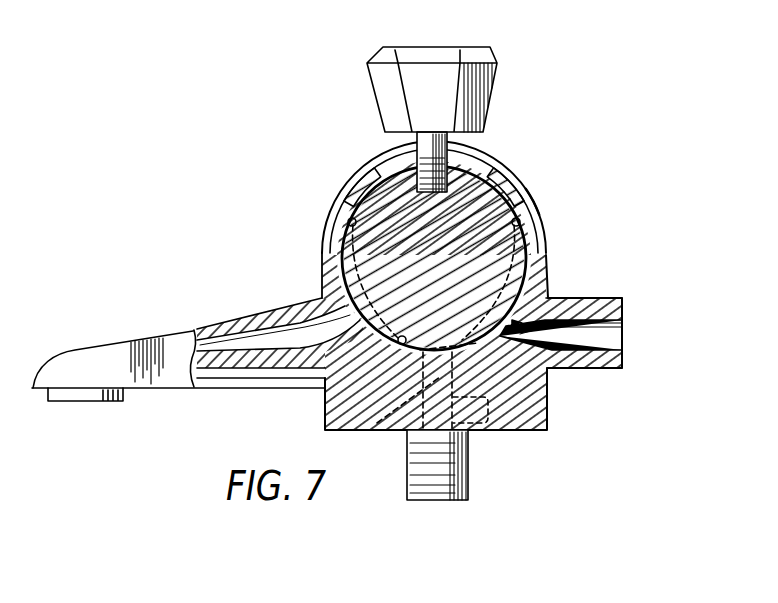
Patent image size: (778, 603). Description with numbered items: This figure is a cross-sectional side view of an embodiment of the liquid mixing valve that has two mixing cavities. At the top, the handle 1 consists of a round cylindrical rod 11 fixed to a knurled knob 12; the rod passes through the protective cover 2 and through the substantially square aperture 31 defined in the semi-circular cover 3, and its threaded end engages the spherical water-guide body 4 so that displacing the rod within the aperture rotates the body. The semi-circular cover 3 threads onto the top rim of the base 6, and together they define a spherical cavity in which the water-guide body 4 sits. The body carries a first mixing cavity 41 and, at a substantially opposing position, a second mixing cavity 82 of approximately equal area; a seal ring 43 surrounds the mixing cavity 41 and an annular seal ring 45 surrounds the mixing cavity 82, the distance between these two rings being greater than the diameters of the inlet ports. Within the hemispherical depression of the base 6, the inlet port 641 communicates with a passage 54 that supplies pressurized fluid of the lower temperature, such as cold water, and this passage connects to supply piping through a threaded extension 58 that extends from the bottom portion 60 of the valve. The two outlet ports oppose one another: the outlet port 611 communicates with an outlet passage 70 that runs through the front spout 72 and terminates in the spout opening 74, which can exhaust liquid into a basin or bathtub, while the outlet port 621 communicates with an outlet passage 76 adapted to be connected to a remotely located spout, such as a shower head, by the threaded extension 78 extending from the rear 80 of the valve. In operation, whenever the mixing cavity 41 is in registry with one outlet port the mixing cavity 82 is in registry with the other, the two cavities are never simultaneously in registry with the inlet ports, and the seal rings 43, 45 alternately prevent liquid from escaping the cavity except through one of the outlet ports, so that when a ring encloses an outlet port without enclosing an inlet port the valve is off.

The handle 1 is at (374, 89).
The knurled knob 12 is at (497, 80).
The round cylindrical rod 11 is at (428, 160).
The protective cover 2 is at (507, 166).
The square aperture 31 is at (379, 170).
The rear 80 is at (543, 200).
The semi-circular cover 3 is at (531, 232).
The water-guide body 4 is at (347, 183).
The seal ring 43 is at (348, 221).
The annular seal ring 45 is at (521, 226).
The mixing cavity 41 is at (318, 283).
The outlet port 611 is at (283, 310).
The outlet passage 70 is at (232, 343).
The front spout 72 is at (100, 348).
The spout opening 74 is at (103, 402).
The bottom portion 60 is at (323, 432).
The base 6 is at (538, 388).
The inlet port 641 is at (388, 420).
The passage 54 is at (490, 425).
The threaded extension 58 is at (468, 487).
The outlet port 621 is at (555, 302).
The threaded extension 78 is at (622, 299).
The outlet passage 76 is at (623, 337).
The mixing cavity 82 is at (560, 290).